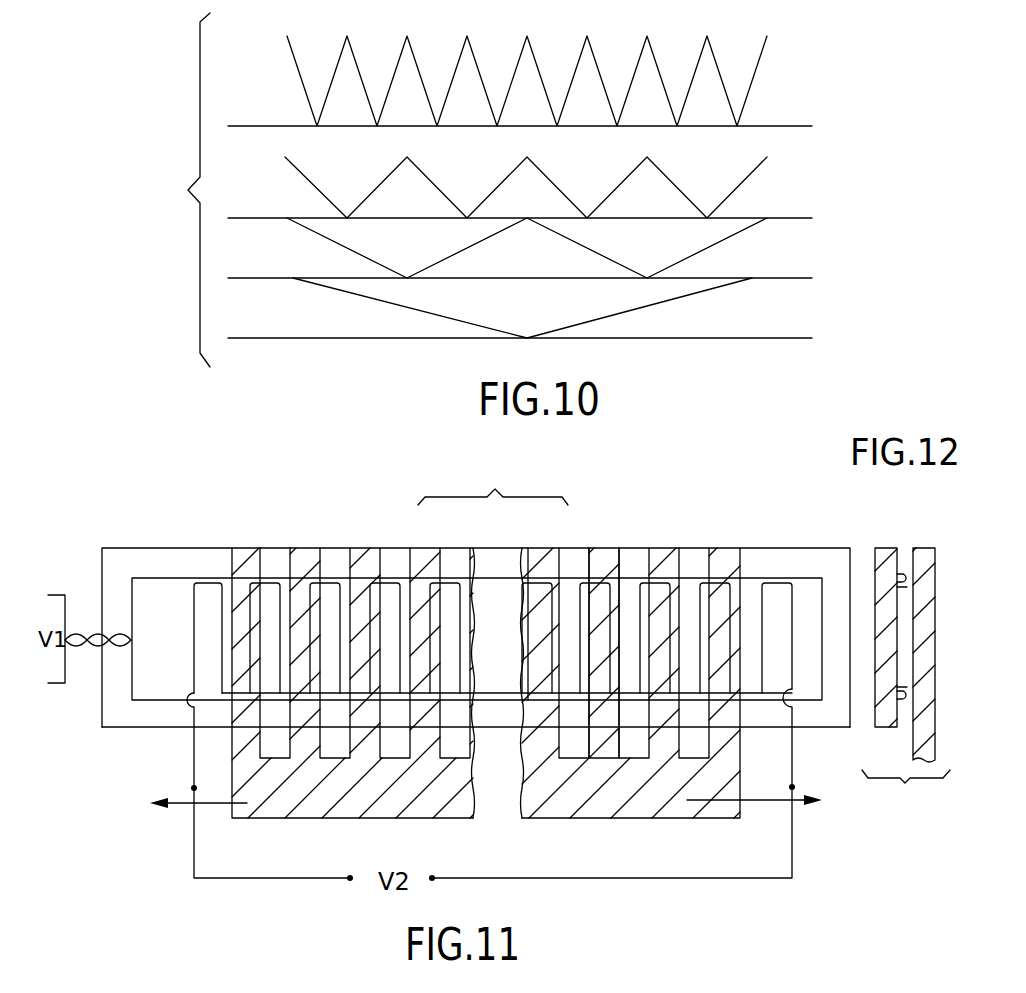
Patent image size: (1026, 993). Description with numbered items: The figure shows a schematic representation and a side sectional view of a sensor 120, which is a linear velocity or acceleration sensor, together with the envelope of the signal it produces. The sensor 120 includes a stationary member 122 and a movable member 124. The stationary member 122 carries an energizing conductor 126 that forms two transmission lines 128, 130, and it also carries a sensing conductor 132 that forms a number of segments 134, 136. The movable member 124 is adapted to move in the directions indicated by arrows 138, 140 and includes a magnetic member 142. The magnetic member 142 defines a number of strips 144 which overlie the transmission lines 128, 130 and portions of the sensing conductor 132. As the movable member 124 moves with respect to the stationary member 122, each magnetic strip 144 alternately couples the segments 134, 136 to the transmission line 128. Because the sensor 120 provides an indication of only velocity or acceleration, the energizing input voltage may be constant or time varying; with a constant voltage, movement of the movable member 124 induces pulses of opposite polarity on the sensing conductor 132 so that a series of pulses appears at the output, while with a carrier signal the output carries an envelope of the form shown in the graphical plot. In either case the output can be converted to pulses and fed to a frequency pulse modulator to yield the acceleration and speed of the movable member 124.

In FIG. 11, the sensor 120 is at (258, 526).
In FIG. 12, the sensor 120 is at (926, 527).
In FIG. 11, the stationary member 122 is at (127, 547).
In FIG. 11, the movable member 124 is at (315, 818).
In FIG. 11, the energizing conductor 126 is at (132, 688).
In FIG. 11, the transmission line 128 is at (805, 577).
In FIG. 11, the transmission line 130 is at (833, 715).
In FIG. 11, the sensing conductor 132 is at (194, 775).
In FIG. 11, the segment 134 is at (451, 587).
In FIG. 11, the segment 136 is at (570, 711).
In FIG. 11, the arrow 138 is at (182, 806).
In FIG. 11, the arrow 140 is at (768, 804).
In FIG. 11, the magnetic member 142 is at (631, 677).
In FIG. 11, the strip 144 is at (603, 562).